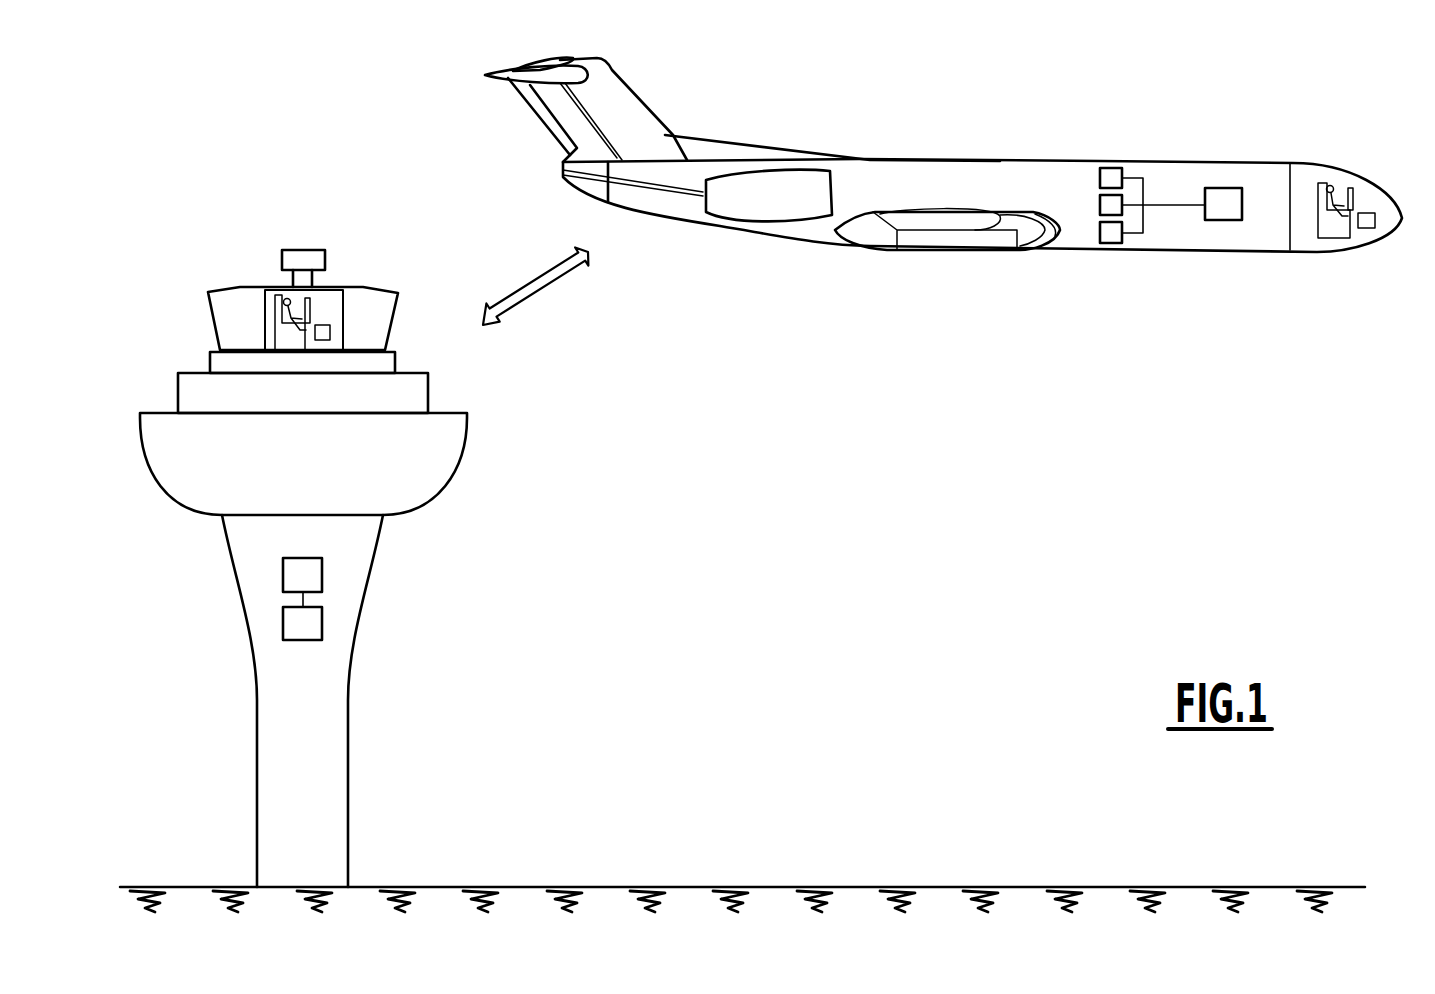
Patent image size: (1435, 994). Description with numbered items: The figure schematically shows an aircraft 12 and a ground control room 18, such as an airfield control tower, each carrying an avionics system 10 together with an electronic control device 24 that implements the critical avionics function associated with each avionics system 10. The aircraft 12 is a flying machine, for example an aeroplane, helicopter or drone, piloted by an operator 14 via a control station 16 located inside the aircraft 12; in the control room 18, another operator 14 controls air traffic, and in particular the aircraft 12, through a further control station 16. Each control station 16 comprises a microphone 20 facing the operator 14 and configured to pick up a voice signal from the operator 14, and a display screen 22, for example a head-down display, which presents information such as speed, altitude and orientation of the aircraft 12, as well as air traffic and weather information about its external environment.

The avionics system 10 is at (310, 625).
The aircraft 12 is at (1120, 268).
The operator 14 is at (282, 308).
The control station 16 is at (340, 340).
The ground control room 18 is at (458, 382).
The microphone 20 is at (330, 333).
The display screen 22 is at (310, 313).
The electronic control device 24 is at (310, 577).